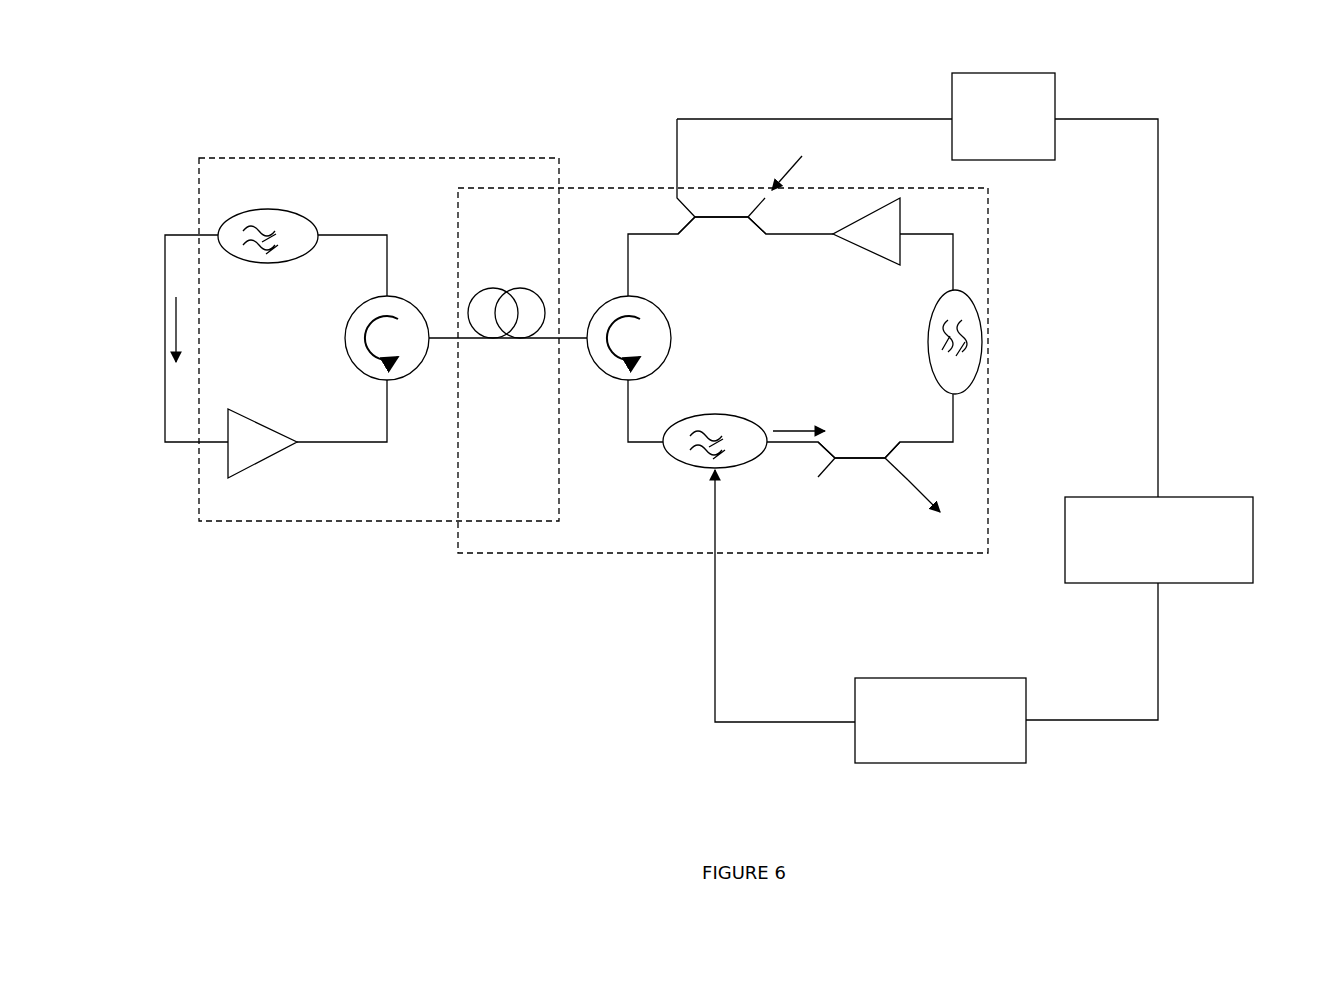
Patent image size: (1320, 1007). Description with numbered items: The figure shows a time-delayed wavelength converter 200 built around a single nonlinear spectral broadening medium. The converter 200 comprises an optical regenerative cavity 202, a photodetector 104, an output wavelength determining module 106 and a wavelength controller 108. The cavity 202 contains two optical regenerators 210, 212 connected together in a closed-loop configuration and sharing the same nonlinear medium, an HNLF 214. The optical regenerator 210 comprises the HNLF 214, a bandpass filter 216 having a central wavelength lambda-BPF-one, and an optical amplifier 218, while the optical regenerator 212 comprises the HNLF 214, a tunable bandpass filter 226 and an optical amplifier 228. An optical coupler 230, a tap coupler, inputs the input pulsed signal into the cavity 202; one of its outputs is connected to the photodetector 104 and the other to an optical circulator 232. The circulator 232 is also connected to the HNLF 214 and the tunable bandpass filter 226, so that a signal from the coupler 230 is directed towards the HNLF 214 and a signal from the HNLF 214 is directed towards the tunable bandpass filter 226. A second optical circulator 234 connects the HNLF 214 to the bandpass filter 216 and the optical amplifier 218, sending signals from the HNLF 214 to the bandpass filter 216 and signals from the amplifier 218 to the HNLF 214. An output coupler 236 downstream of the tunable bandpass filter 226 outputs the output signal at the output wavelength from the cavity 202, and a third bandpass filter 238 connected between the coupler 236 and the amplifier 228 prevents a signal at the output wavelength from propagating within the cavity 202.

The photodetector 104 is at (1038, 82).
The output wavelength determining module 106 is at (1230, 565).
The wavelength controller 108 is at (992, 755).
The time-delayed wavelength converter 200 is at (1222, 100).
The optical regenerative cavity 202 is at (371, 612).
The optical regenerator 210 is at (302, 158).
The optical regenerator 212 is at (611, 553).
The HNLF 214 is at (526, 285).
The bandpass filter 216 is at (287, 227).
The optical amplifier 218 is at (255, 454).
The tunable bandpass filter 226 is at (731, 414).
The optical amplifier 228 is at (866, 238).
The optical coupler 230 is at (733, 244).
The optical circulator 232 is at (647, 327).
The second optical circulator 234 is at (347, 346).
The output coupler 236 is at (851, 485).
The third bandpass filter 238 is at (953, 308).